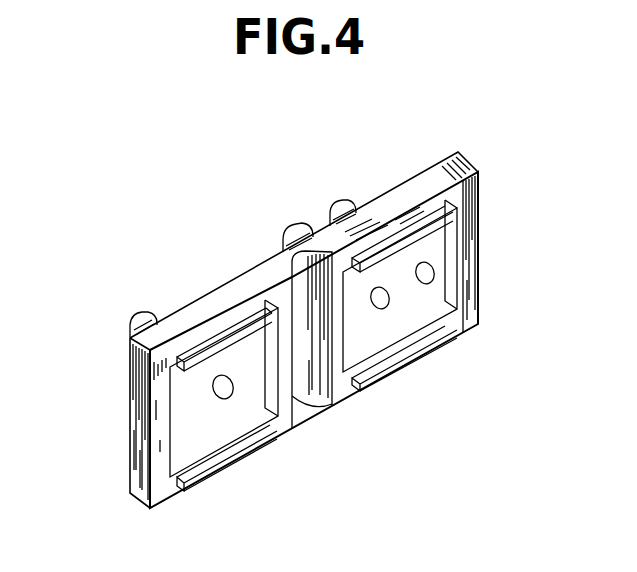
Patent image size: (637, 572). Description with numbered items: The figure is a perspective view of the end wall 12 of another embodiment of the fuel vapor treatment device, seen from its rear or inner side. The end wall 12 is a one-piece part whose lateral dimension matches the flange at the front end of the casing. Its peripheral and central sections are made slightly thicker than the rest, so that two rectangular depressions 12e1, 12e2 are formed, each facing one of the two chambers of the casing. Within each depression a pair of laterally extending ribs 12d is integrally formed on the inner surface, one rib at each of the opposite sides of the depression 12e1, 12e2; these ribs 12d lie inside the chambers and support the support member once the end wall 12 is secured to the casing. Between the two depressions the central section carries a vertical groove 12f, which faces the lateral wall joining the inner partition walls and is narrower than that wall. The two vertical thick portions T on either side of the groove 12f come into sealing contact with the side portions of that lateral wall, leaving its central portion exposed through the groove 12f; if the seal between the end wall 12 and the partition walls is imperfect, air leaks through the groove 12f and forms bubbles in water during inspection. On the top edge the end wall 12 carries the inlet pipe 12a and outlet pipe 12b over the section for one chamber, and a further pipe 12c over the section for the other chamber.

The end wall 12 is at (233, 293).
The inlet pipe 12a is at (340, 208).
The outlet pipe 12b is at (293, 223).
The tab 12c is at (143, 312).
The laterally extending ribs 12d is at (418, 222).
The rectangular depression 12e1 is at (427, 297).
The rectangular depression 12e2 is at (183, 415).
The vertical groove 12f is at (315, 358).
The vertical thick portions T is at (340, 340).